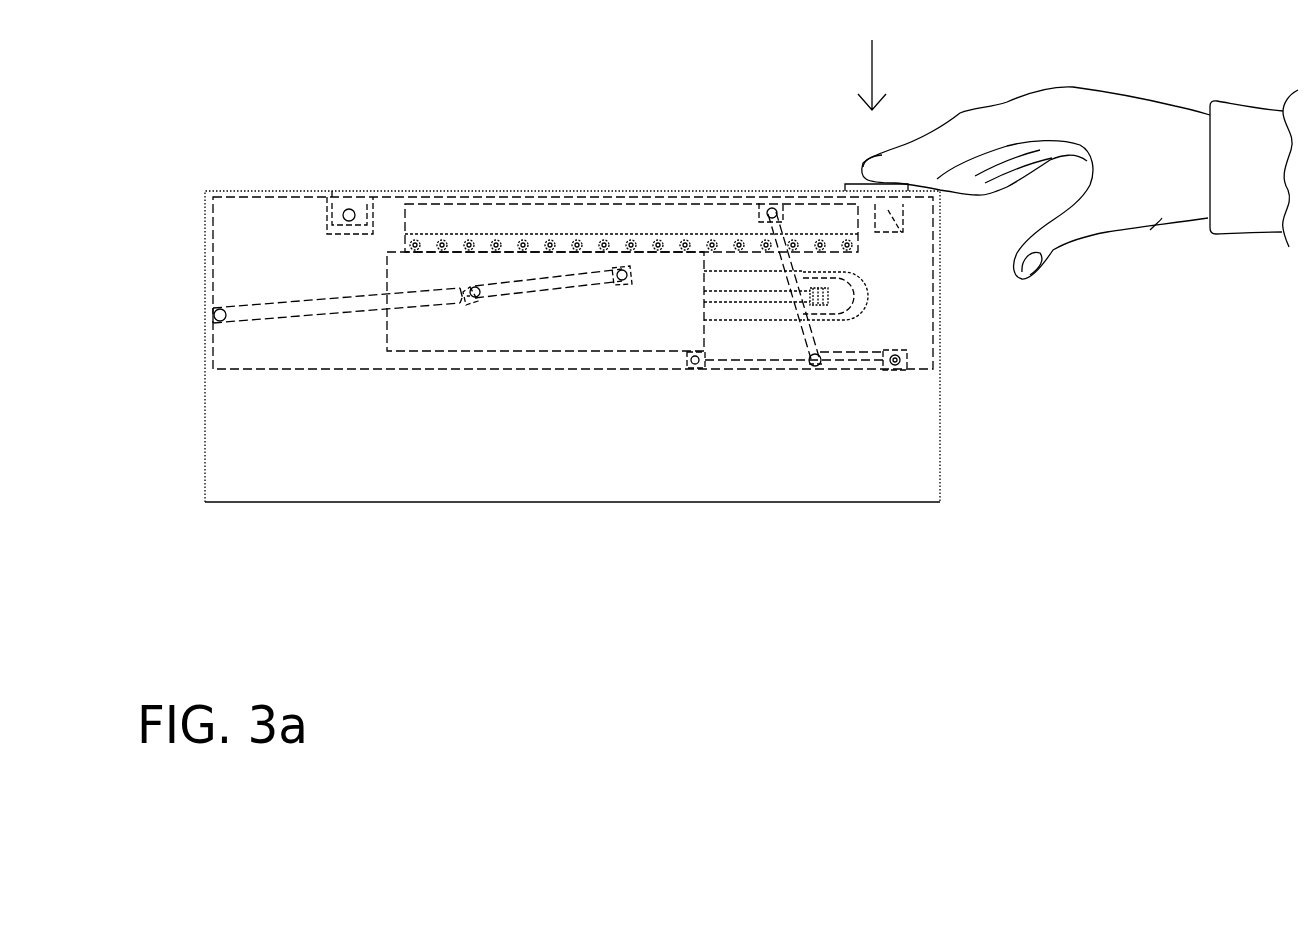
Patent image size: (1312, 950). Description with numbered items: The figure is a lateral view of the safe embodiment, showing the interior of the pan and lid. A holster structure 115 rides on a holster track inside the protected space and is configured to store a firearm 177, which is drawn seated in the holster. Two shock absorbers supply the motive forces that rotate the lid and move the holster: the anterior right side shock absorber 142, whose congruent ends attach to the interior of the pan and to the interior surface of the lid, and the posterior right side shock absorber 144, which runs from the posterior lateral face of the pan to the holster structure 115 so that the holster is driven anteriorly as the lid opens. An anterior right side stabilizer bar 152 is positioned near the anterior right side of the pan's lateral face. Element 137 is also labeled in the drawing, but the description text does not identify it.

The holster structure 115 is at (677, 285).
The switch 137 is at (888, 218).
The anterior right side shock absorber 142 is at (822, 344).
The posterior right side shock absorber 144 is at (297, 315).
The anterior right side stabilizer bar 152 is at (875, 363).
The firearm 177 is at (868, 294).